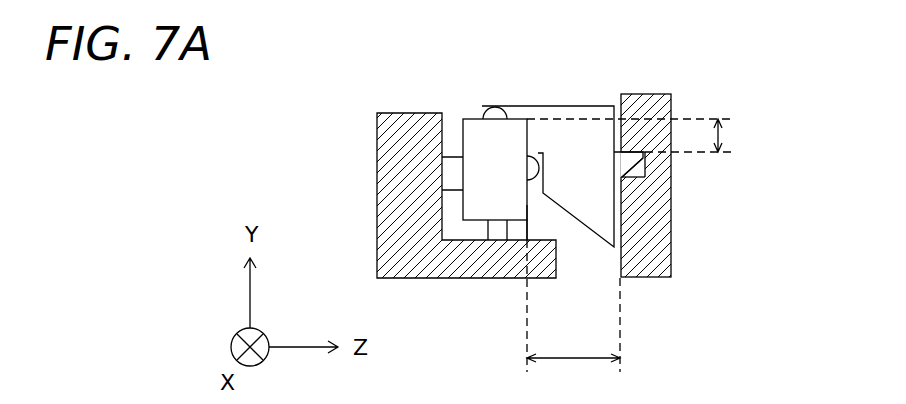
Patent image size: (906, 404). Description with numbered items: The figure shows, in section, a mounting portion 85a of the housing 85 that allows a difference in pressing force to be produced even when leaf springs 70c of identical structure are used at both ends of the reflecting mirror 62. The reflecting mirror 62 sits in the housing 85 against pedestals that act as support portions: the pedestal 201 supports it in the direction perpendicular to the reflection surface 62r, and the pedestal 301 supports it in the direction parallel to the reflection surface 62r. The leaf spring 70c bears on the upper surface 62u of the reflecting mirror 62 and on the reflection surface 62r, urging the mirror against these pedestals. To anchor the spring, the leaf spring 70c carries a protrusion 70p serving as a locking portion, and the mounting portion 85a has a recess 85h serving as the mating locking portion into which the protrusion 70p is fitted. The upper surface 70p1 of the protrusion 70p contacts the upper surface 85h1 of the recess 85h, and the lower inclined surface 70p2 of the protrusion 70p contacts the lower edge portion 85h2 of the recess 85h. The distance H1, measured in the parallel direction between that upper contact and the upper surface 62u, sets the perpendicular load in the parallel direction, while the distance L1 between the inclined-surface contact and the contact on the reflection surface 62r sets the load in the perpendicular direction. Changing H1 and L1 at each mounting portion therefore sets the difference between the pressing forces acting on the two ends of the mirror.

The housing 85 is at (424, 278).
The mounting portion 85a is at (645, 278).
The recess 85h is at (652, 176).
The upper surface of the recess 85h1 is at (645, 166).
The lower edge portion of the recess 85h2 is at (625, 178).
The leaf spring 70c is at (545, 105).
The protrusion 70p is at (613, 162).
The upper surface of the protrusion 70p1 is at (623, 152).
The lower inclined surface of the protrusion 70p2 is at (636, 178).
The reflecting mirror 62 is at (468, 152).
The upper surface of the reflecting mirror 62u is at (472, 118).
The reflection surface 62r is at (528, 207).
The pedestal 201 is at (453, 170).
The pedestal 301 is at (483, 240).
The distance in the parallel direction H1 is at (641, 135).
The distance L1 is at (573, 306).